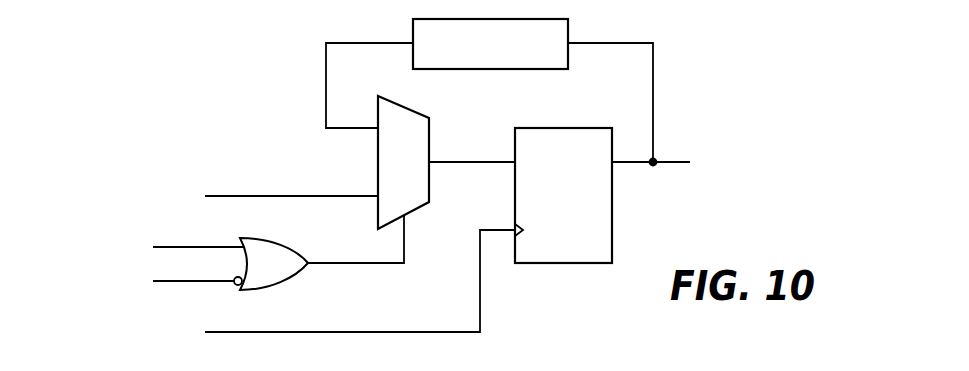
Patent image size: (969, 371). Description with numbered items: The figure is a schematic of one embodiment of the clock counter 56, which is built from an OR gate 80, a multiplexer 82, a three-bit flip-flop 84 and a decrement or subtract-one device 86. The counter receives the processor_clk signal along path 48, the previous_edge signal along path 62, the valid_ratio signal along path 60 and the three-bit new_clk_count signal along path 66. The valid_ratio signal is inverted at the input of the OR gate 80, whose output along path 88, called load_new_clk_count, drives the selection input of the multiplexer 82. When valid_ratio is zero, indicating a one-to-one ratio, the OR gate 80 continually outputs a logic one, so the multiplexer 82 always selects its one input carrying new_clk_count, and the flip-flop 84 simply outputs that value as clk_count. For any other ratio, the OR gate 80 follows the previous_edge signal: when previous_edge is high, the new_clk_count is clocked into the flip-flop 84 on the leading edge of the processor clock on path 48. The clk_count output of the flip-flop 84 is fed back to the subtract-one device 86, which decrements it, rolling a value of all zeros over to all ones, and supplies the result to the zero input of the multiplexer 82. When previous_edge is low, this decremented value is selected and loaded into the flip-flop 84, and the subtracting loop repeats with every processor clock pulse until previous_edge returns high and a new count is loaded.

The clock counter 56 is at (172, 95).
The subtract 1 device 86 is at (523, 69).
The multiplexer 82 is at (430, 140).
The three-bit flip-flop 84 is at (612, 195).
The path for new_clk_count signal 66 is at (278, 196).
The path for previous_edge signal 62 is at (218, 247).
The path for valid_ratio signal 60 is at (218, 283).
The OR gate 80 is at (300, 234).
The path for load_new_clk_count signal 88 is at (386, 263).
The path for processor_clk signal 48 is at (330, 332).